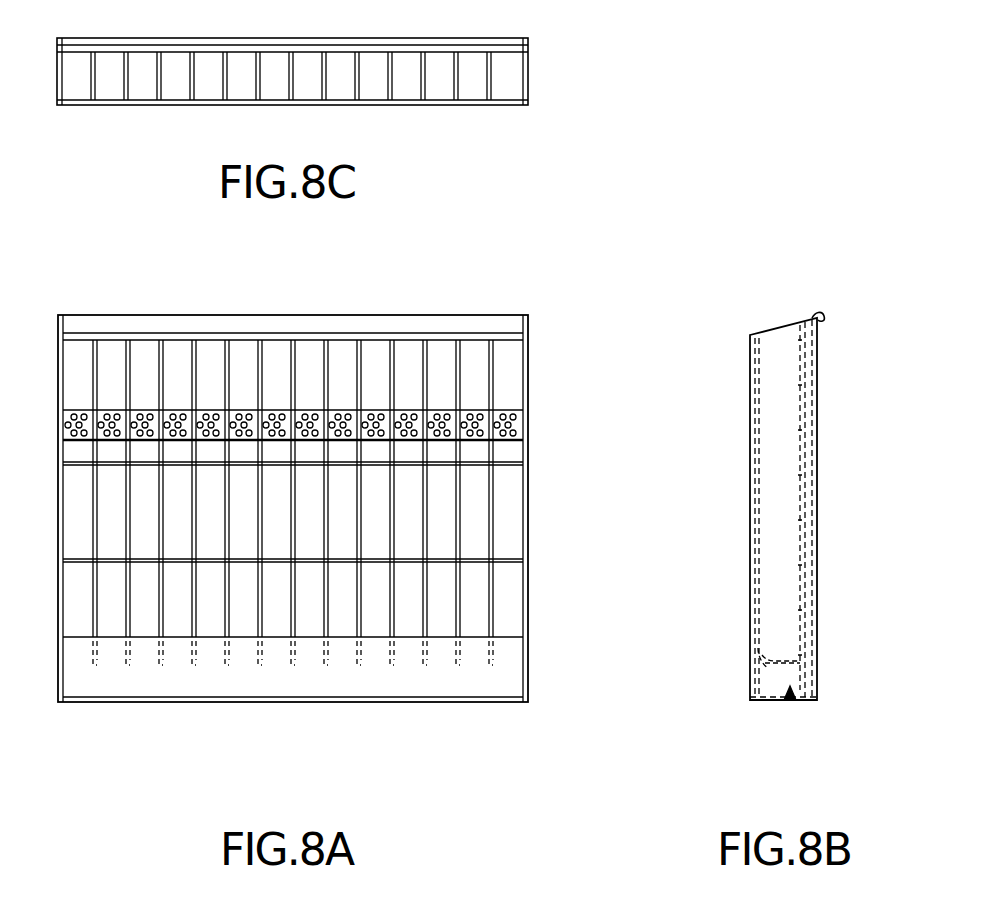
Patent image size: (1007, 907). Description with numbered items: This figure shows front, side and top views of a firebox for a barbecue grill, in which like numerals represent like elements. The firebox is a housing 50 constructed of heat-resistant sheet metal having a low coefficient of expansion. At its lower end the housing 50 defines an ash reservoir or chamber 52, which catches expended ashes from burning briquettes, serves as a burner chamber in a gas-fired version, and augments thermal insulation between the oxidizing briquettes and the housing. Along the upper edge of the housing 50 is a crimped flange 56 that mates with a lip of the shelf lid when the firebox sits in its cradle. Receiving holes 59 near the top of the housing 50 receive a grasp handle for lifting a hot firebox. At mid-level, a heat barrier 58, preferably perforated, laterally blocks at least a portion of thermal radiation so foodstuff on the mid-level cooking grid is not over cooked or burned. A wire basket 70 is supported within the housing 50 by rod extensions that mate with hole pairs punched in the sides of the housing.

In FIG. 8C, the firebox housing 50 is at (528, 80).
In FIG. 8A, the firebox housing 50 is at (319, 519).
In FIG. 8B, the firebox housing 50 is at (779, 511).
In FIG. 8B, the ash reservoir or chamber 52 is at (790, 705).
In FIG. 8B, the crimped flange 56 is at (824, 316).
In FIG. 8A, the heat barrier 58 is at (507, 407).
In FIG. 8B, the heat barrier 58 is at (750, 428).
In FIG. 8A, the receiving holes 59 is at (285, 335).
In FIG. 8A, the wire basket 70 is at (492, 606).
In FIG. 8B, the wire basket 70 is at (760, 657).